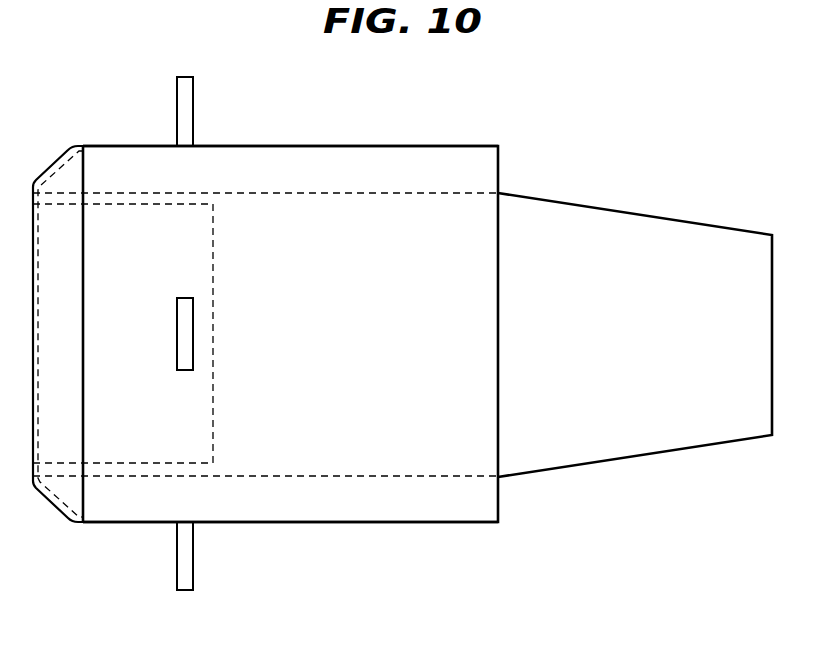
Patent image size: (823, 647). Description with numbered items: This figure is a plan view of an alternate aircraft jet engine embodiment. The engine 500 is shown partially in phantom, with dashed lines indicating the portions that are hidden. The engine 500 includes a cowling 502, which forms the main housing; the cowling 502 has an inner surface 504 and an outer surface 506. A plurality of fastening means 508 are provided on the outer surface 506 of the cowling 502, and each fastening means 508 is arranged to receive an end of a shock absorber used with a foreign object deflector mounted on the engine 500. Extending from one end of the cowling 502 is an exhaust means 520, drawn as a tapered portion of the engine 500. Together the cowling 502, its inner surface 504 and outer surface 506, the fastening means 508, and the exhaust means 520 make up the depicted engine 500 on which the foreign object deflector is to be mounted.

The engine 500 is at (392, 112).
The cowling 502 is at (140, 193).
The inner surface 504 is at (502, 158).
The outer surface 506 is at (397, 503).
The fastening means 508 is at (177, 349).
The exhaust means 520 is at (630, 225).